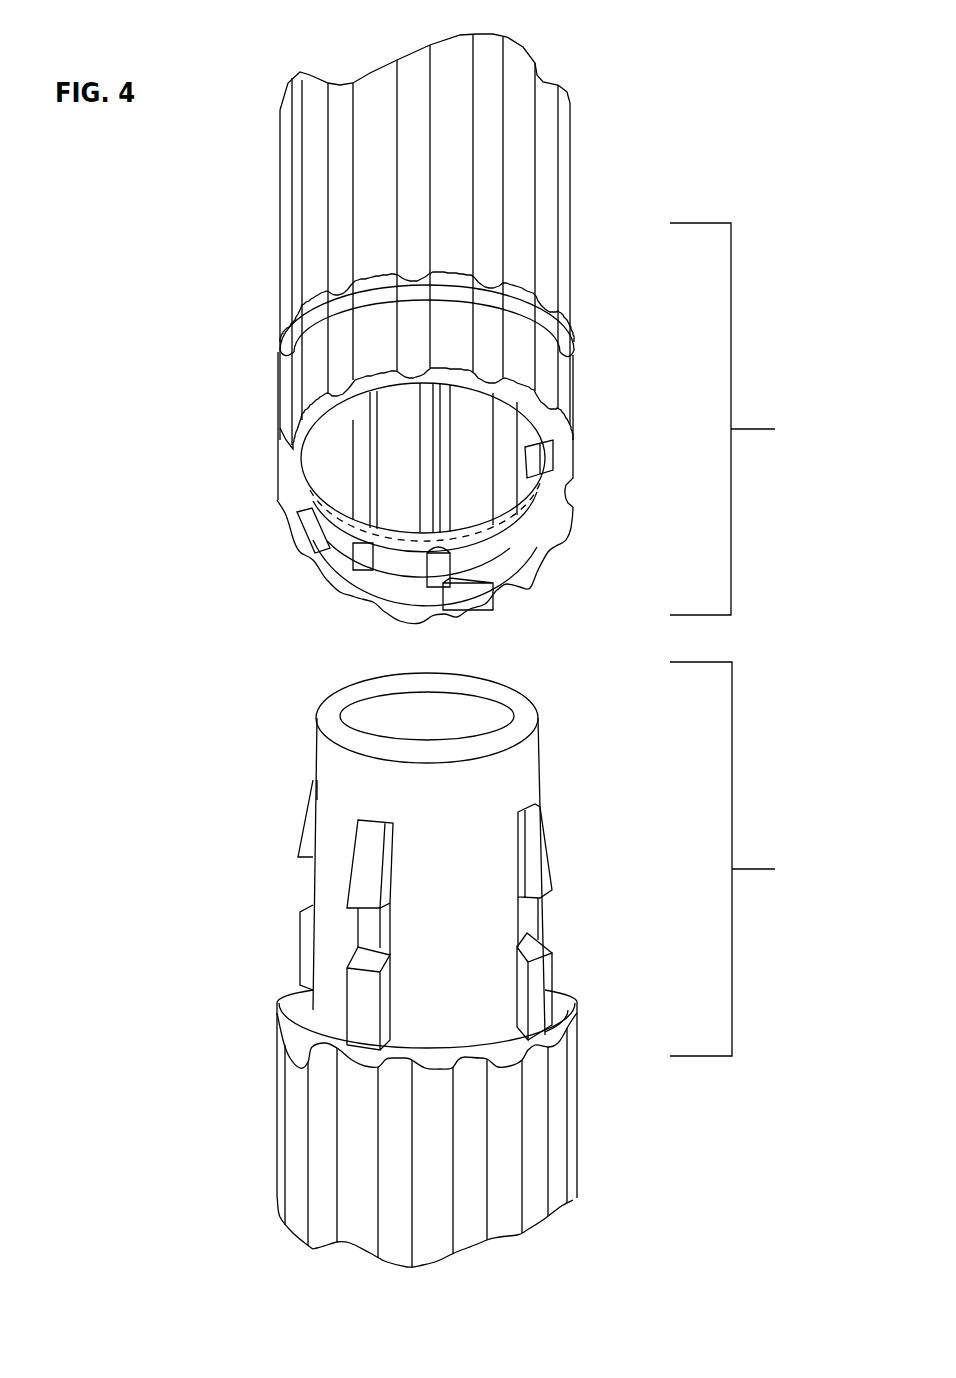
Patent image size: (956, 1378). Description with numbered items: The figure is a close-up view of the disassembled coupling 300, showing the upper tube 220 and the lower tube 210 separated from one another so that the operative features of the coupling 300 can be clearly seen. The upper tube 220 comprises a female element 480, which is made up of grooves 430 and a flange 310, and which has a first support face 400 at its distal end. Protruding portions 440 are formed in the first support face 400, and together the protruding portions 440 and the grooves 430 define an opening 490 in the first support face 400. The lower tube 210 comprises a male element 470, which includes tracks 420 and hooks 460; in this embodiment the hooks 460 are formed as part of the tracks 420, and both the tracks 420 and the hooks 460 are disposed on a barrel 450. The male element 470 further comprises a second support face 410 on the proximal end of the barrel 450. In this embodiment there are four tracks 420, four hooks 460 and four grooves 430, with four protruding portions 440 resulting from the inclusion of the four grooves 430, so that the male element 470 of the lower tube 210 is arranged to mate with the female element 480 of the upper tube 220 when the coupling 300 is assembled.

The coupling 300 is at (138, 250).
The upper tube 220 is at (553, 170).
The flange 310 is at (280, 370).
The first support face 400 is at (425, 494).
The opening 490 is at (458, 468).
The grooves 430 is at (303, 535).
The protruding portions 440 is at (355, 570).
The female element 480 is at (745, 419).
The male element 470 is at (746, 859).
The barrel 450 is at (371, 861).
The hooks 460 is at (347, 900).
The second support face 410 is at (302, 1020).
The tracks 420 is at (360, 1018).
The lower tube 210 is at (557, 1177).